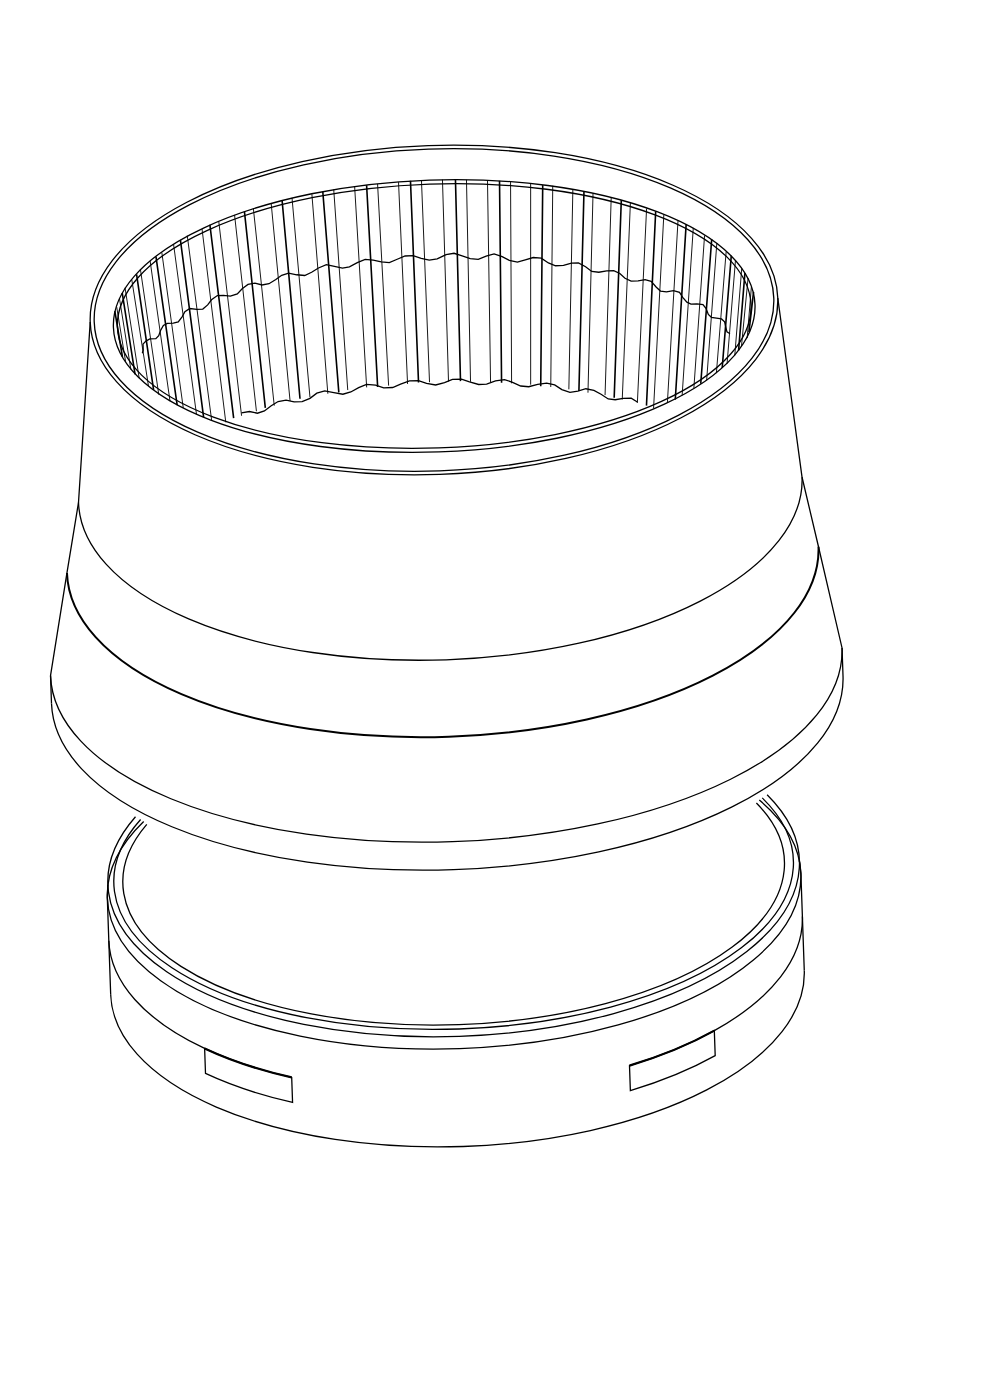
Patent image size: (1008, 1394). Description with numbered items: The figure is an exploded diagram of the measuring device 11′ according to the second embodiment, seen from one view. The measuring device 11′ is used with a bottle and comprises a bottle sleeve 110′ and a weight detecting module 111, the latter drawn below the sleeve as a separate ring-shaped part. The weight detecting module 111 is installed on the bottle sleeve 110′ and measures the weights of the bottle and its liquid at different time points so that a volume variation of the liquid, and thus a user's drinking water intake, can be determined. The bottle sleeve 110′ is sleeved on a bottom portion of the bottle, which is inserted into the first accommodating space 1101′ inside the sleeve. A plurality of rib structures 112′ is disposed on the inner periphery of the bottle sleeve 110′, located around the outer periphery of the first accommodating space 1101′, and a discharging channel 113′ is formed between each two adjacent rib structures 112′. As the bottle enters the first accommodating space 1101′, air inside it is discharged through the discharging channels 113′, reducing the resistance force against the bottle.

The measuring device 11′ is at (731, 64).
The bottle sleeve 110′ is at (766, 414).
The weight detecting module 111 is at (583, 1113).
The rib structures 112′ is at (403, 190).
The discharging channel 113′ is at (432, 180).
The first accommodating space 1101′ is at (406, 420).